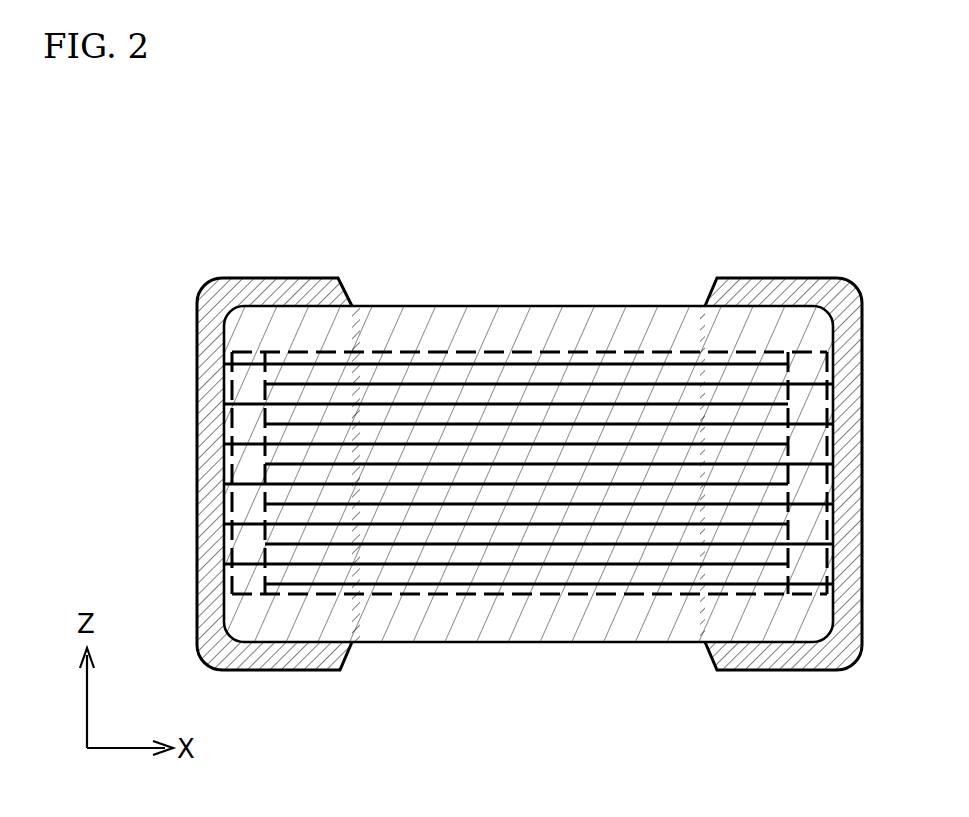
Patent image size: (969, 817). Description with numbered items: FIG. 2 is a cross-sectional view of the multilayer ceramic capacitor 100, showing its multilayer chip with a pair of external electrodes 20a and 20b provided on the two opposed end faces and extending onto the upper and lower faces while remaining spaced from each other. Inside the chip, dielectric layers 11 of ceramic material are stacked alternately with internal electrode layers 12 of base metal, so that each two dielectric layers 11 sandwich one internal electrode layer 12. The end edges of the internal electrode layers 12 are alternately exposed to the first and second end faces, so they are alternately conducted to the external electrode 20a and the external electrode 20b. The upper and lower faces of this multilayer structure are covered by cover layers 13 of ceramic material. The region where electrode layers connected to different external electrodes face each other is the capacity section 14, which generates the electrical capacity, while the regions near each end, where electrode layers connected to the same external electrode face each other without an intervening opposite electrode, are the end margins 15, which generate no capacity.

The multilayer ceramic capacitor 100 is at (757, 220).
The dielectric layer 11 is at (635, 556).
The internal electrode layer 12 is at (470, 527).
The cover layer 13 is at (422, 320).
The capacity section 14 is at (553, 352).
The end margin 15 is at (250, 352).
The external electrode 20a is at (222, 278).
The external electrode 20b is at (822, 278).